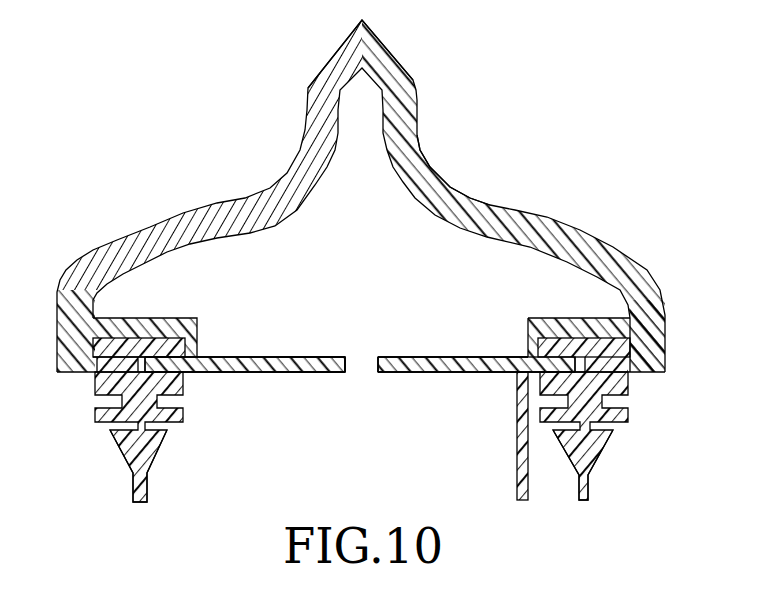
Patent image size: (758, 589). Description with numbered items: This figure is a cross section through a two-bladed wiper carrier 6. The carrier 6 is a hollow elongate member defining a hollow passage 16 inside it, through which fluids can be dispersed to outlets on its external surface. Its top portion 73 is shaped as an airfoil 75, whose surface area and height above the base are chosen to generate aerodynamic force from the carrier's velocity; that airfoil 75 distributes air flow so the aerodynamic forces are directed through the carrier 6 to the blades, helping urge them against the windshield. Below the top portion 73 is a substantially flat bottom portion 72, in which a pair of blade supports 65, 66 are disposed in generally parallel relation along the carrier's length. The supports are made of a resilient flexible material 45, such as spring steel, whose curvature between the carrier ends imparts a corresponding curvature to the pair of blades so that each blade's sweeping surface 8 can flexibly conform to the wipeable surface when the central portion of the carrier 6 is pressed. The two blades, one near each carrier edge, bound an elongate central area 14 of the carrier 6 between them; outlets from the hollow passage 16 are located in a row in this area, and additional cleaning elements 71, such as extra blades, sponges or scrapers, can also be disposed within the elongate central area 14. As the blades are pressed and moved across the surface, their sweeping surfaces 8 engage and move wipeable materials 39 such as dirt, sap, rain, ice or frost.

The carrier 6 is at (604, 236).
The airfoil 75 is at (436, 108).
The top portion 73 is at (452, 187).
The hollow passage 16 is at (377, 285).
The blade support 65 is at (136, 362).
The blade support 66 is at (585, 359).
The flat bottom portion 72 is at (240, 372).
The elongate central area 14 is at (281, 380).
The wipeable materials 39 is at (317, 372).
The resilient flexible material 45 is at (490, 372).
The additional cleaning elements 71 is at (517, 490).
The sweeping surface 8 is at (133, 466).